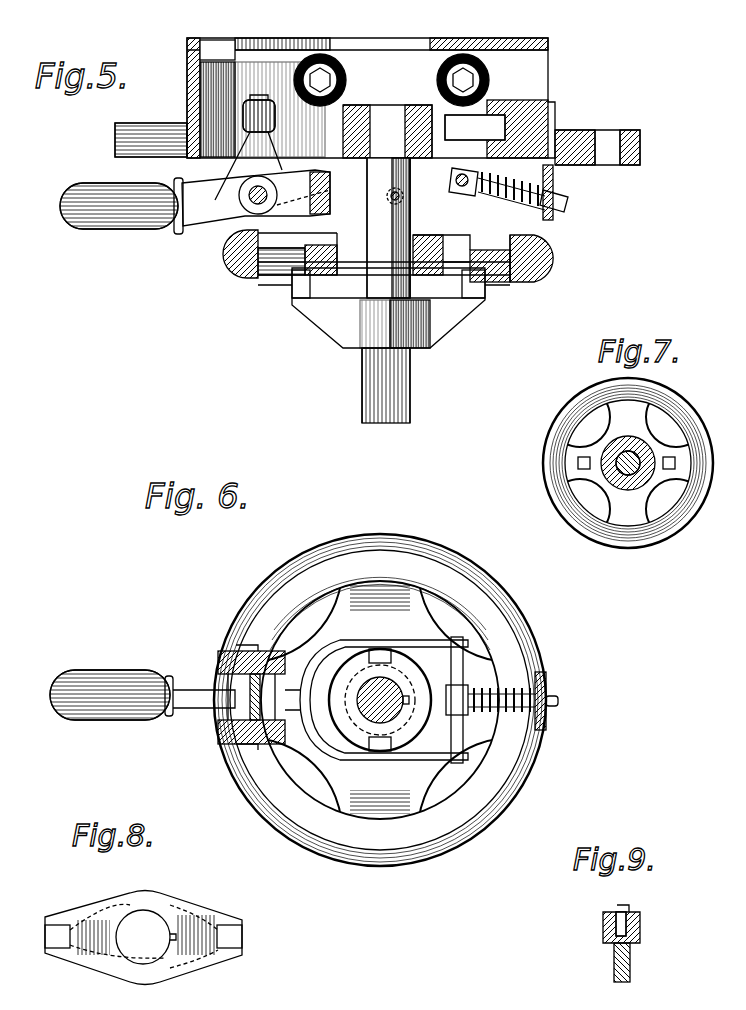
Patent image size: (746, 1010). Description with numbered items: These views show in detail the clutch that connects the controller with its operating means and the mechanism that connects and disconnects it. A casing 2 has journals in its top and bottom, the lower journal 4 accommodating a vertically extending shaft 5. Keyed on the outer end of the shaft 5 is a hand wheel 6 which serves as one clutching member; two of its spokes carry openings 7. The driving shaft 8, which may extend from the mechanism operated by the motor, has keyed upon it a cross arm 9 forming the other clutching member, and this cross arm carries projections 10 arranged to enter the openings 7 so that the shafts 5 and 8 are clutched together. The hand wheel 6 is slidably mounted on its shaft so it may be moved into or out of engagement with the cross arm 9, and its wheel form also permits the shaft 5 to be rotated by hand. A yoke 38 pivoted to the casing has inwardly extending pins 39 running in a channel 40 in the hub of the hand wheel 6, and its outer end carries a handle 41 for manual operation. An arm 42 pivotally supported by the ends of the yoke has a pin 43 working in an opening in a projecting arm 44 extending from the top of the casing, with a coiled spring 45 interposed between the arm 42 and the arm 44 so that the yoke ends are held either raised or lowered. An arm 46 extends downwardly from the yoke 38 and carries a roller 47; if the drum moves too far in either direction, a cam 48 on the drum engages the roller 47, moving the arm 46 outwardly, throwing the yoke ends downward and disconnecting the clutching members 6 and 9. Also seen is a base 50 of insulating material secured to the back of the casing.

In FIG. 5, the casing 2 is at (187, 74).
In FIG. 6, the journal 4 is at (348, 728).
In FIG. 5, the shaft 5 is at (316, 340).
In FIG. 7, the shaft 5 is at (634, 460).
In FIG. 6, the shaft 5 is at (368, 683).
In FIG. 5, the hand wheel 6 is at (99, 168).
In FIG. 7, the hand wheel 6 is at (690, 525).
In FIG. 6, the hand wheel 6 is at (530, 750).
In FIG. 5, the openings 7 is at (339, 232).
In FIG. 7, the openings 7 is at (586, 457).
In FIG. 6, the openings 7 is at (250, 755).
In FIG. 5, the driving shaft 8 is at (405, 384).
In FIG. 5, the cross arm 9 is at (265, 94).
In FIG. 8, the cross arm 9 is at (205, 918).
In FIG. 5, the projections 10 is at (478, 288).
In FIG. 8, the projections 10 is at (58, 928).
In FIG. 6, the yoke 38 is at (445, 630).
In FIG. 5, the pins 39 is at (400, 200).
In FIG. 6, the pins 39 is at (372, 683).
In FIG. 5, the channel 40 is at (312, 268).
In FIG. 5, the handle 41 is at (140, 232).
In FIG. 6, the handle 41 is at (140, 688).
In FIG. 5, the arm 42 is at (464, 192).
In FIG. 6, the arm 42 is at (468, 690).
In FIG. 6, the pin 43 is at (556, 698).
In FIG. 5, the projecting arm 44 is at (570, 200).
In FIG. 5, the coiled spring 45 is at (540, 214).
In FIG. 6, the coiled spring 45 is at (520, 690).
In FIG. 5, the arm 46 is at (262, 214).
In FIG. 6, the arm 46 is at (255, 651).
In FIG. 5, the roller 47 is at (276, 121).
In FIG. 9, the roller 47 is at (640, 930).
In FIG. 5, the cam 48 is at (500, 128).
In FIG. 5, the base 50 is at (222, 48).